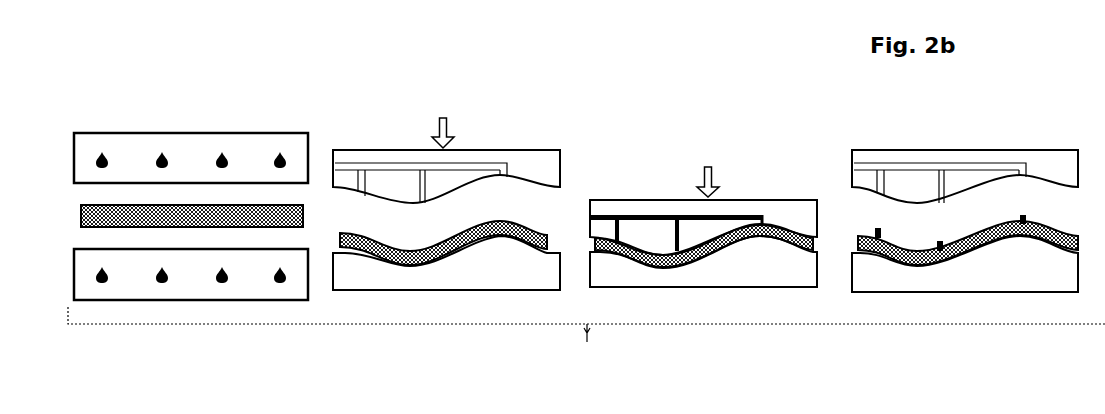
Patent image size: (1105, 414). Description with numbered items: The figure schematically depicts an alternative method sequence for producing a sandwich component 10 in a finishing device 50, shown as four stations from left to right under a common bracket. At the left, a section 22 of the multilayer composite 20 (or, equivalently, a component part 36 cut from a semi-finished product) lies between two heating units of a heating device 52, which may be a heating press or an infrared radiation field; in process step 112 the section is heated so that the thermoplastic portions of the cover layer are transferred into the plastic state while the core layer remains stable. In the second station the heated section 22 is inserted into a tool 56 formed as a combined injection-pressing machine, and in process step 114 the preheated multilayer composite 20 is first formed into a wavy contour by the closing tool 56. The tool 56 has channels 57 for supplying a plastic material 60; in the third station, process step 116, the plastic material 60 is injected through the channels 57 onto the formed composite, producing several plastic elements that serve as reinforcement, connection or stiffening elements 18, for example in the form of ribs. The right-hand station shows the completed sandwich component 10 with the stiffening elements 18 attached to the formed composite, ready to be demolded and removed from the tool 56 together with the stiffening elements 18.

The sandwich component 10 is at (968, 173).
The stiffening elements 18 is at (886, 228).
The multilayer composite 20 is at (447, 179).
The section 22 is at (447, 179).
The component parts 36 is at (183, 212).
The finishing device 50 is at (586, 344).
The heating device 52 is at (158, 123).
The tool 56 is at (705, 155).
The channels 57 is at (378, 165).
The plastic material 60 is at (695, 215).
The process step 112 is at (191, 165).
The process step 114 is at (452, 98).
The process step 116 is at (695, 117).